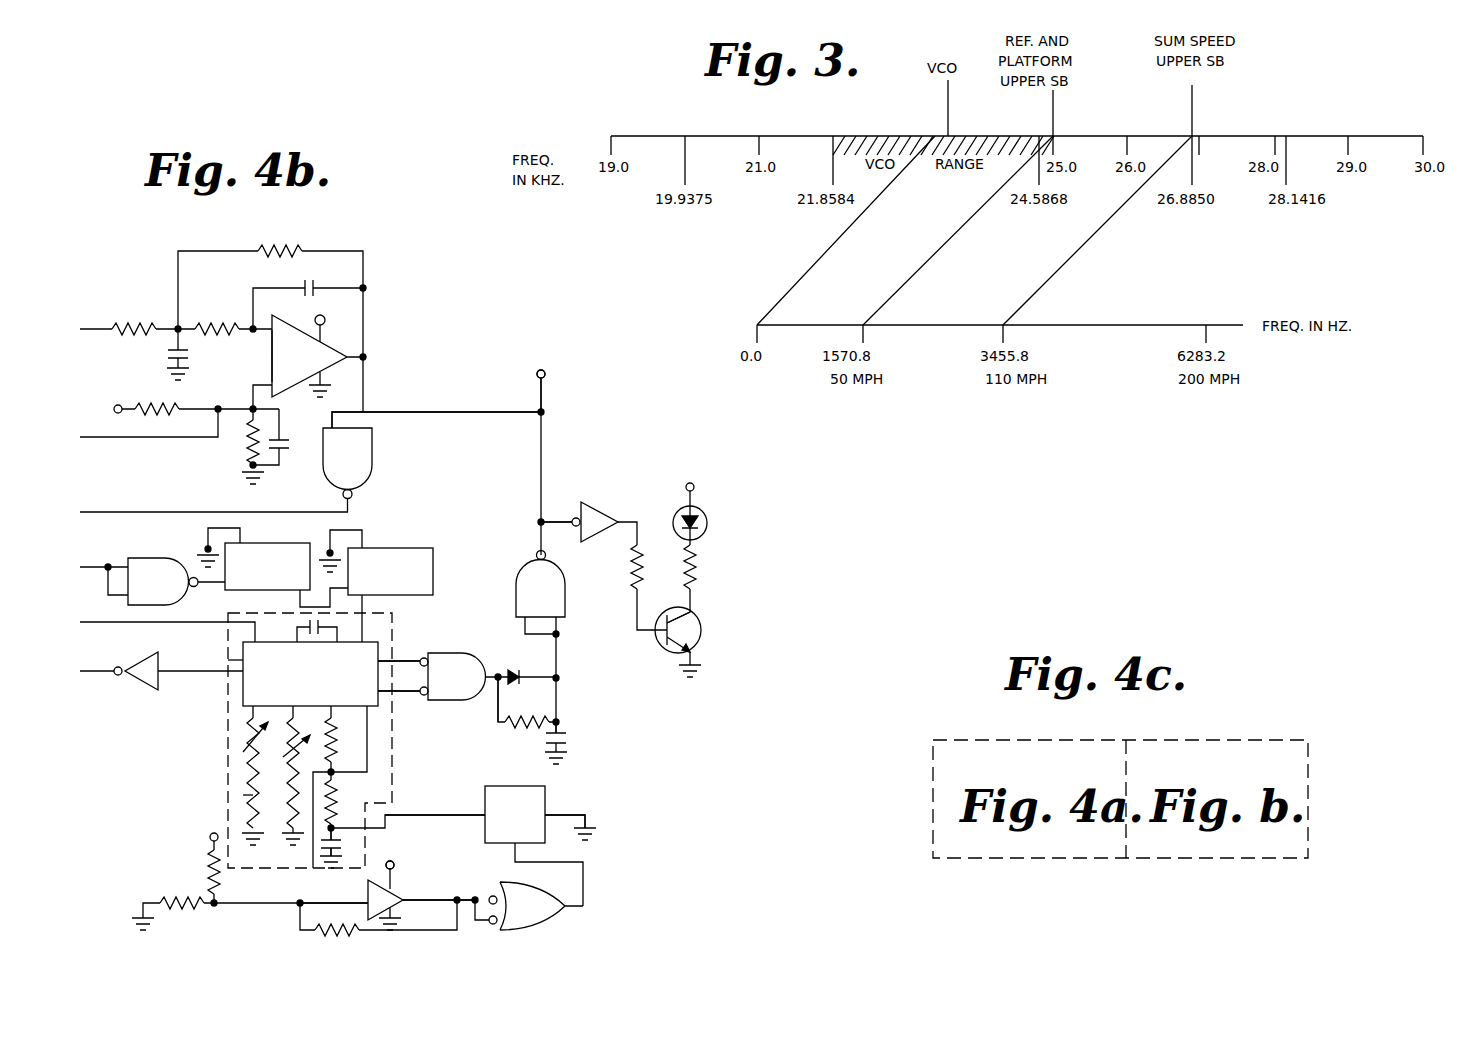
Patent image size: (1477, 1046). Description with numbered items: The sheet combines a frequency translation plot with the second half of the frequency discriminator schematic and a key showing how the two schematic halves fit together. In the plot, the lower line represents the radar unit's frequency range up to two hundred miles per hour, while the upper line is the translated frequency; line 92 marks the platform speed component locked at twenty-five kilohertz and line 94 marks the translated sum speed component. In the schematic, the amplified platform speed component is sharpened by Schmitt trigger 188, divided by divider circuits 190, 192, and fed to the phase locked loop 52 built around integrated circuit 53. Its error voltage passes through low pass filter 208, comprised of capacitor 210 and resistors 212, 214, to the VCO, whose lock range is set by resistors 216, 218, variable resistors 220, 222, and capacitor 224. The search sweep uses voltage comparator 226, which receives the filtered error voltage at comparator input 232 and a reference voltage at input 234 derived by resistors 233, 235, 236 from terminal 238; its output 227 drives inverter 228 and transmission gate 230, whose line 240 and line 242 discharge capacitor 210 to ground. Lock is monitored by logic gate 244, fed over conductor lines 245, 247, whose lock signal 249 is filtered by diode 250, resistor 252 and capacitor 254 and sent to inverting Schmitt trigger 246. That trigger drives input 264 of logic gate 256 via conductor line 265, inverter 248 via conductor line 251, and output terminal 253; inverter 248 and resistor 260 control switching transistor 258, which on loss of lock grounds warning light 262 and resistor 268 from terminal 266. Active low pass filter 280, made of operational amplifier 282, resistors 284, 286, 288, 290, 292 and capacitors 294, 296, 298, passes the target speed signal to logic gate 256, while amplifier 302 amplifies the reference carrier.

In FIG. 3, the line 92 is at (933, 254).
In FIG. 3, the line 94 is at (1070, 254).
In FIG. 4B, the phase locked loop 52 is at (228, 692).
In FIG. 4B, the integrated circuit 53 is at (228, 658).
In FIG. 4B, the Schmitt trigger 188 is at (164, 558).
In FIG. 4B, the divider circuit 190 is at (254, 542).
In FIG. 4B, the divider circuit 192 is at (387, 542).
In FIG. 4B, the low pass filter 208 is at (355, 805).
In FIG. 4B, the capacitor 210 is at (340, 837).
In FIG. 4B, the resistor 212 is at (332, 724).
In FIG. 4B, the resistor 214 is at (332, 795).
In FIG. 4B, the resistor 216 is at (251, 794).
In FIG. 4B, the resistor 218 is at (292, 815).
In FIG. 4B, the variable resistor 220 is at (250, 728).
In FIG. 4B, the variable resistor 222 is at (296, 758).
In FIG. 4B, the capacitor 224 is at (304, 626).
In FIG. 4B, the voltage comparator 226 is at (395, 874).
In FIG. 4B, the output 227 is at (447, 904).
In FIG. 4B, the inverter 228 is at (560, 914).
In FIG. 4B, the transmission gate 230 is at (527, 784).
In FIG. 4B, the comparator input 232 is at (317, 882).
In FIG. 4B, the resistor 233 is at (212, 872).
In FIG. 4B, the comparator input 234 is at (357, 900).
In FIG. 4B, the resistor 235 is at (159, 898).
In FIG. 4B, the resistor 236 is at (334, 929).
In FIG. 4B, the terminal 238 is at (210, 837).
In FIG. 4B, the line 240 is at (422, 814).
In FIG. 4B, the line 242 is at (588, 834).
In FIG. 4B, the logic gate 244 is at (438, 652).
In FIG. 4B, the conductor line 245 is at (398, 658).
In FIG. 4B, the Schmitt trigger 246 is at (514, 588).
In FIG. 4B, the conductor line 247 is at (400, 700).
In FIG. 4B, the inverter 248 is at (594, 503).
In FIG. 4B, the lock signal 249 is at (494, 670).
In FIG. 4B, the diode 250 is at (502, 687).
In FIG. 4B, the conductor line 251 is at (573, 492).
In FIG. 4B, the resistor 252 is at (508, 726).
In FIG. 4B, the output terminal 253 is at (536, 374).
In FIG. 4B, the capacitor 254 is at (570, 730).
In FIG. 4B, the logic gate 256 is at (372, 452).
In FIG. 4B, the switching transistor 258 is at (702, 621).
In FIG. 4B, the resistor 260 is at (632, 563).
In FIG. 4B, the warning light 262 is at (706, 514).
In FIG. 4B, the input 264 is at (332, 413).
In FIG. 4B, the conductor line 265 is at (444, 412).
In FIG. 4B, the terminal 266 is at (684, 486).
In FIG. 4B, the resistor 268 is at (698, 566).
In FIG. 4B, the active low pass filter 280 is at (350, 346).
In FIG. 4B, the operational amplifier 282 is at (294, 316).
In FIG. 4B, the resistor 284 is at (271, 247).
In FIG. 4B, the resistor 286 is at (152, 318).
In FIG. 4B, the resistor 288 is at (224, 318).
In FIG. 4B, the resistor 290 is at (164, 405).
In FIG. 4B, the resistor 292 is at (246, 450).
In FIG. 4B, the capacitor 294 is at (315, 282).
In FIG. 4B, the capacitor 296 is at (191, 349).
In FIG. 4B, the capacitor 298 is at (288, 450).
In FIG. 4B, the amplifier 302 is at (144, 654).